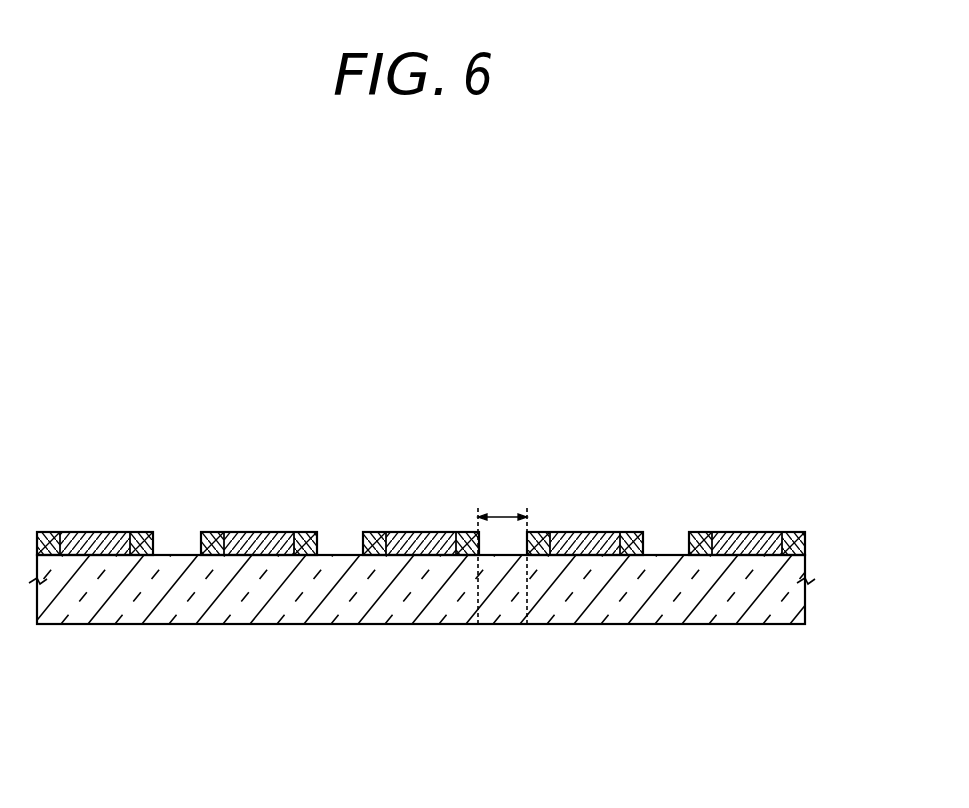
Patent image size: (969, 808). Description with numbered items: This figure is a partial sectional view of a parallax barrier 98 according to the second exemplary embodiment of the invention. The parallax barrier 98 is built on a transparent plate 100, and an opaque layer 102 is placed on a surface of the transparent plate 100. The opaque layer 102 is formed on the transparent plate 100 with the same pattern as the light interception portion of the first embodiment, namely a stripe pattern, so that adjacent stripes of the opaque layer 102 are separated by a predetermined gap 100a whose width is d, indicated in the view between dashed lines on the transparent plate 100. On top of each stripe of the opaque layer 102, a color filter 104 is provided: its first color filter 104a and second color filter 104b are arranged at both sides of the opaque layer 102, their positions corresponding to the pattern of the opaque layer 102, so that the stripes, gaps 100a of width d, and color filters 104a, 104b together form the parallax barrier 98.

The parallax barrier 98 is at (790, 458).
The transparent plate 100 is at (805, 607).
The gap 100a is at (500, 600).
The opaque layer 102 is at (420, 532).
The color filter 104 is at (467, 362).
The first color filter 104a is at (375, 532).
The second color filter 104b is at (465, 532).
The gap width d is at (502, 500).